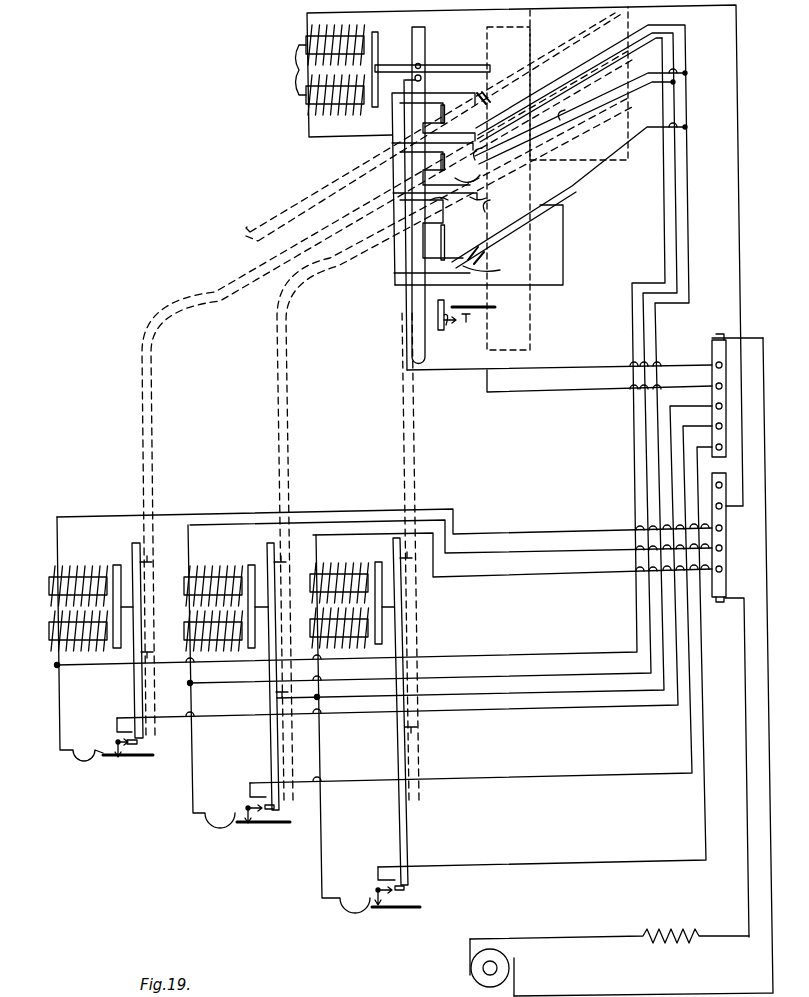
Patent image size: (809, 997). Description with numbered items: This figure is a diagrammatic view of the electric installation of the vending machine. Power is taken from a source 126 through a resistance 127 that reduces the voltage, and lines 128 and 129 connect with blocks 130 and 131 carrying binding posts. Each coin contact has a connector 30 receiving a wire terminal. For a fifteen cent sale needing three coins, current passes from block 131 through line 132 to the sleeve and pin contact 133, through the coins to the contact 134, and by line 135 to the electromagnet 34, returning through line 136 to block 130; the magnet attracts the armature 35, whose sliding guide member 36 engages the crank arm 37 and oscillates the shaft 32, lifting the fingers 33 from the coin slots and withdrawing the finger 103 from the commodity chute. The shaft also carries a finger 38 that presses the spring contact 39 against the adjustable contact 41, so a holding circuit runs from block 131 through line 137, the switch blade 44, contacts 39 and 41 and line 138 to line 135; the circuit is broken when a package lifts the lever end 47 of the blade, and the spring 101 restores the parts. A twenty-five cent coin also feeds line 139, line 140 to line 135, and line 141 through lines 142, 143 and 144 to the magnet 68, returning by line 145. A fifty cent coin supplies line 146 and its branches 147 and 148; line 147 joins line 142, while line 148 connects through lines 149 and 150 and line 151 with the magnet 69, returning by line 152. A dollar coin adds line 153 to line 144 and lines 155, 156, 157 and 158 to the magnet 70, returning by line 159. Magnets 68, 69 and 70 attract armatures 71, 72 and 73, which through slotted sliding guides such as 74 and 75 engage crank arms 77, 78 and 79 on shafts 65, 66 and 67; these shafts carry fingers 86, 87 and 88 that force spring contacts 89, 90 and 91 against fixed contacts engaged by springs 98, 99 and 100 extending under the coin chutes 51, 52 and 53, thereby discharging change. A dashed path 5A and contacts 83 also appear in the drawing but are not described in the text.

The dashed path 5A is at (434, 127).
The connector 30 is at (524, 167).
The vertical shaft 32 is at (425, 42).
The fingers 33 is at (445, 178).
The electromagnet 34 is at (316, 70).
The armature 35 is at (378, 50).
The sliding guide member 36 is at (455, 65).
The crank arm 37 is at (421, 78).
The finger 38 is at (425, 352).
The spring contact 39 is at (452, 325).
The adjustable contact member 41 is at (462, 322).
The blade 44 is at (473, 304).
The lever 47 is at (510, 295).
The coin chute 51 is at (414, 470).
The coin chute 52 is at (288, 475).
The coin chute 53 is at (152, 470).
The shaft 65 is at (405, 777).
The shaft 66 is at (276, 737).
The shaft 67 is at (135, 684).
The electromagnet 68 is at (343, 574).
The electromagnet 69 is at (213, 577).
The electromagnet 70 is at (80, 577).
The armature 71 is at (378, 562).
The armature 72 is at (251, 565).
The armature 73 is at (117, 565).
The sliding guide 74 is at (392, 617).
The sliding guide 75 is at (262, 600).
The crank arm 77 is at (400, 607).
The crank arm 78 is at (270, 612).
The crank arm 79 is at (141, 609).
The contacts 83 is at (289, 636).
The finger 86 is at (408, 888).
The finger 87 is at (279, 810).
The finger 88 is at (143, 742).
The spring contact member 89 is at (378, 890).
The spring contact member 90 is at (248, 808).
The spring contact member 91 is at (118, 742).
The spring 98 is at (395, 915).
The spring 99 is at (262, 830).
The spring 100 is at (128, 765).
The spring 101 is at (530, 330).
The finger 103 is at (505, 60).
The source of power 126 is at (497, 968).
The resistance 127 is at (692, 930).
The line 128 is at (745, 735).
The line 129 is at (768, 768).
The block 130 is at (715, 602).
The block 131 is at (712, 348).
The line 132 is at (600, 360).
The sleeve and pin contact 133 is at (496, 269).
The pin and sleeve contact 134 is at (575, 195).
The line 135 is at (392, 238).
The line 136 is at (579, 83).
The line 137 is at (550, 398).
The line 138 is at (395, 290).
The line 139 is at (444, 207).
The line 140 is at (456, 185).
The line 141 is at (495, 195).
The line 142 is at (675, 225).
The line 143 is at (520, 695).
The line 144 is at (300, 650).
The line 145 is at (525, 572).
The line 146 is at (439, 362).
The line 147 is at (528, 152).
The line 148 is at (578, 116).
The line 149 is at (686, 160).
The line 150 is at (512, 676).
The line 151 is at (192, 683).
The line 152 is at (530, 550).
The line 153 is at (532, 97).
The line 155 is at (602, 71).
The line 156 is at (635, 290).
The line 157 is at (452, 657).
The line 158 is at (52, 665).
The line 159 is at (470, 535).